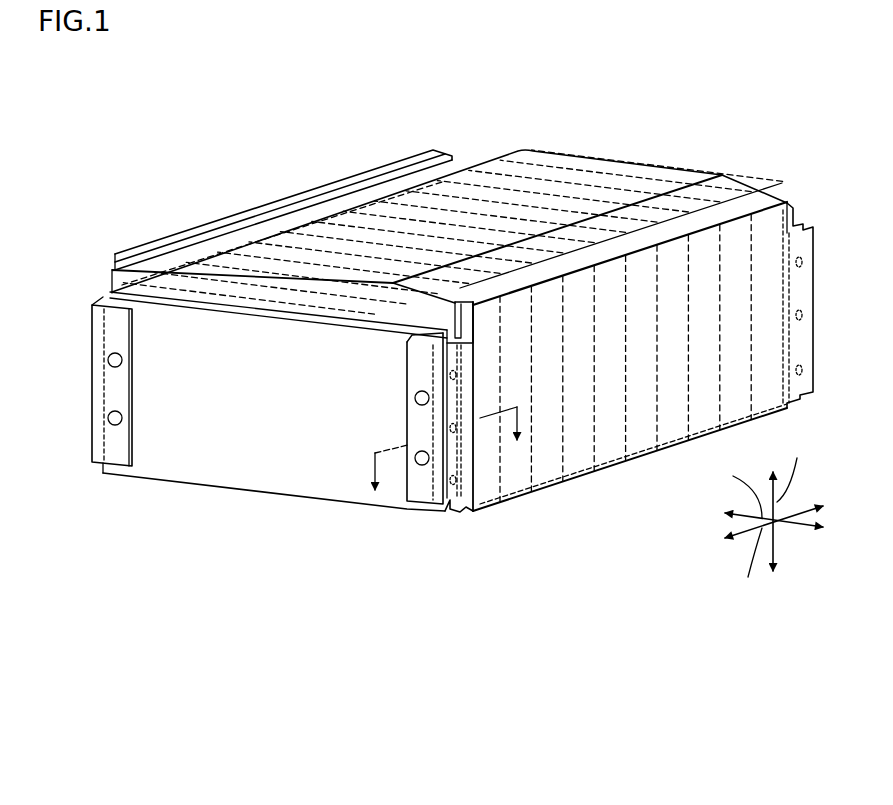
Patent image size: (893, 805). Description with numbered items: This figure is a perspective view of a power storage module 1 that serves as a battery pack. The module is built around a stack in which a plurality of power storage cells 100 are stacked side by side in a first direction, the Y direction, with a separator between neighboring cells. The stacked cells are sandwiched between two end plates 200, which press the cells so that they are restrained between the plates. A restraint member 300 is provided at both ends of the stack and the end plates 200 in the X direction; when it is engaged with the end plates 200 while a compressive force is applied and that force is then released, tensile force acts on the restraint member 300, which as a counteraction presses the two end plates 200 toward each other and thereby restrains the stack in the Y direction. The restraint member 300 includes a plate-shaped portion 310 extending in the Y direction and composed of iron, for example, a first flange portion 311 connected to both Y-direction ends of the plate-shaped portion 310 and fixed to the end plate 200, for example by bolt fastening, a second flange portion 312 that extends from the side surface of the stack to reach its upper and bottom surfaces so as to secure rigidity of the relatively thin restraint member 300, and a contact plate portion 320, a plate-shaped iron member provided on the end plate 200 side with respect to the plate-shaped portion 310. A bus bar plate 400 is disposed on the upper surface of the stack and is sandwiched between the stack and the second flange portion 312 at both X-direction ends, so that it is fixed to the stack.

The power storage module 1 is at (184, 173).
The power storage cell 100 is at (313, 228).
The end plate 200 is at (621, 200).
The restraint member 300 is at (618, 556).
The plate-shaped portion 310 is at (543, 453).
The first flange portion 311 is at (426, 484).
The second flange portion 312 is at (590, 264).
The contact plate portion 320 is at (453, 512).
The bus bar plate 400 is at (528, 170).